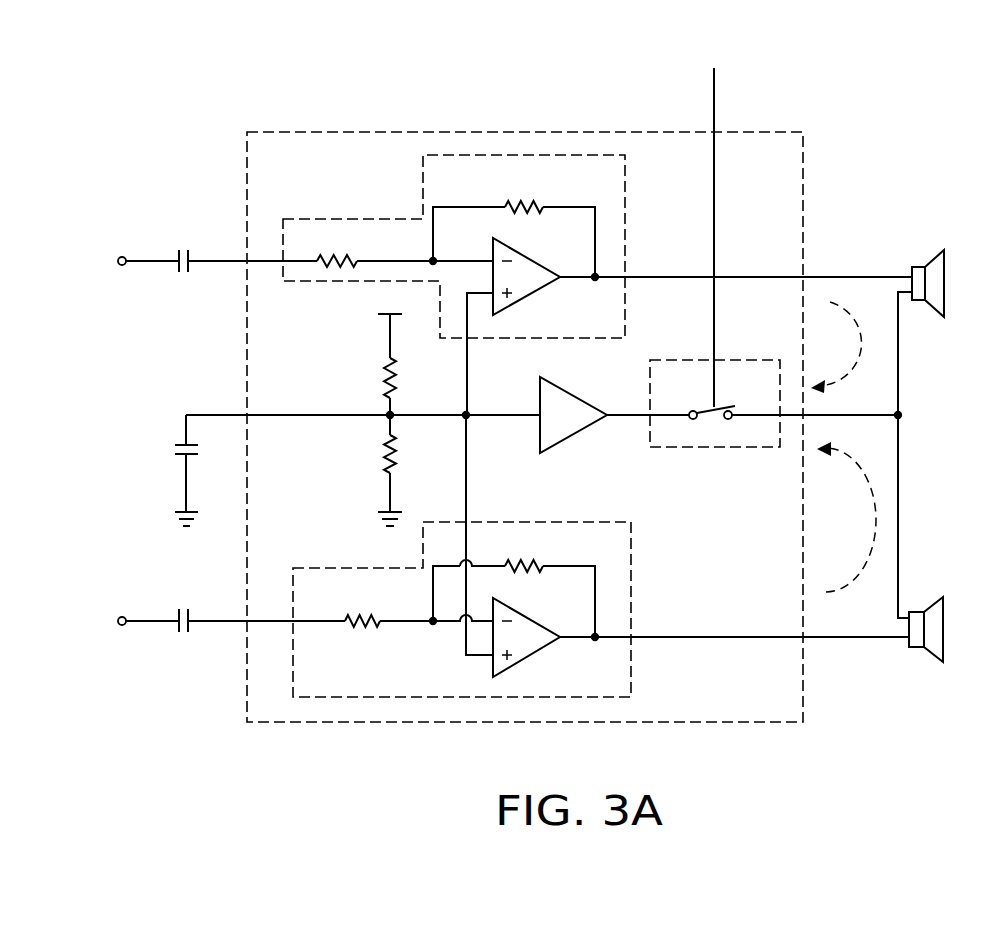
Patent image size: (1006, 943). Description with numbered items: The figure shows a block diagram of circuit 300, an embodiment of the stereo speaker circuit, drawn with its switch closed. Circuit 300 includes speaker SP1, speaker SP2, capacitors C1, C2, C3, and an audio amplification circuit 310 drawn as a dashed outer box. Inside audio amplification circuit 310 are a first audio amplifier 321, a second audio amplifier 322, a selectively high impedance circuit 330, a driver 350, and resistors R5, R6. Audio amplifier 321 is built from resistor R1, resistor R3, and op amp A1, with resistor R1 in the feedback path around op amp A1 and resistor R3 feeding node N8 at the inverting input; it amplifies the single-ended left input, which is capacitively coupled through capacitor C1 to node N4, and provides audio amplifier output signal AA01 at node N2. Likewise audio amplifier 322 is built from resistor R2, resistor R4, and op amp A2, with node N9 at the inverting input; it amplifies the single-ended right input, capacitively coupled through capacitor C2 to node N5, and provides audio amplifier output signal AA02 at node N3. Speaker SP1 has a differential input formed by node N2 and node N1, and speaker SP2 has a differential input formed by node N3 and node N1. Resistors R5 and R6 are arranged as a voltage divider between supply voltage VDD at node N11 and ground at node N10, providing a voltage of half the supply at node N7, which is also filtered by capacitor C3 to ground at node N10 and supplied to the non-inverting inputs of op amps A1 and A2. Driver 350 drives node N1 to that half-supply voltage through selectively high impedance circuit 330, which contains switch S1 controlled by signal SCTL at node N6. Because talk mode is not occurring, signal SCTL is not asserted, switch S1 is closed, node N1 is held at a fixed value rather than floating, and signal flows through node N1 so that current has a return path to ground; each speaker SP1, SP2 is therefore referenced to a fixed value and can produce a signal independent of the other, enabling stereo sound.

The circuit 300 is at (523, 97).
The audio amplification circuit 310 is at (781, 706).
The audio amplifier 321 is at (609, 181).
The audio amplifier 322 is at (613, 552).
The selectively high impedance circuit 330 is at (764, 387).
The driver 350 is at (576, 424).
The node N1 is at (903, 415).
The node N2 is at (852, 276).
The node N3 is at (863, 636).
The node N4 is at (207, 259).
The node N5 is at (207, 619).
The node N6 is at (714, 101).
The node N7 is at (470, 411).
The node N8 is at (429, 259).
The node N9 is at (433, 626).
The node N10 is at (390, 496).
The node N11 is at (390, 341).
The resistor R1 is at (514, 226).
The resistor R2 is at (514, 586).
The resistor R3 is at (405, 246).
The resistor R4 is at (419, 606).
The resistor R5 is at (374, 396).
The resistor R6 is at (374, 473).
The capacitor C1 is at (184, 272).
The capacitor C2 is at (182, 634).
The capacitor C3 is at (173, 463).
The op amp A1 is at (514, 326).
The op amp A2 is at (514, 546).
The switch S1 is at (752, 428).
The speaker SP1 is at (929, 423).
The speaker SP2 is at (932, 617).
The signal SCTL is at (706, 226).
The supply voltage VDD is at (395, 320).
The audio amplifier output signal AA01 is at (736, 266).
The audio amplifier output signal AA02 is at (734, 626).